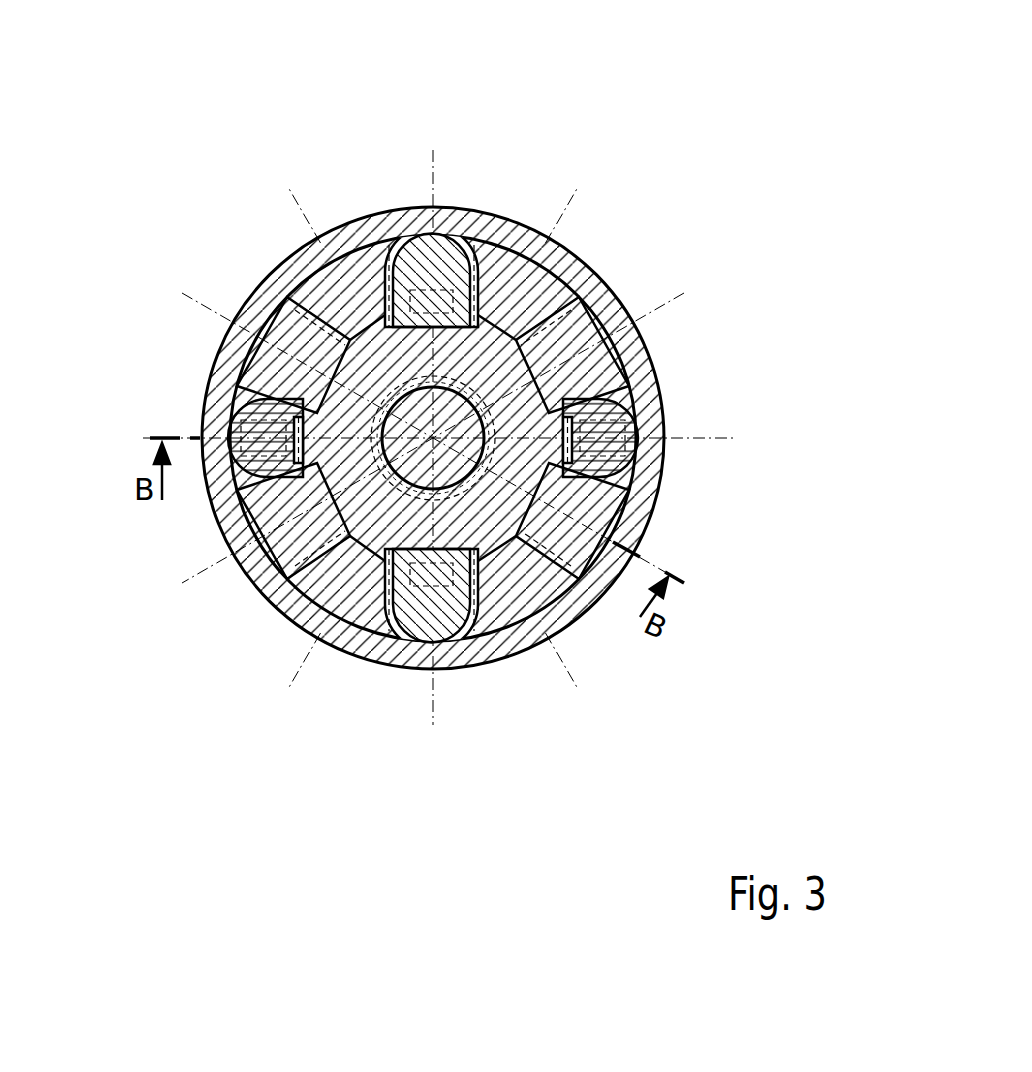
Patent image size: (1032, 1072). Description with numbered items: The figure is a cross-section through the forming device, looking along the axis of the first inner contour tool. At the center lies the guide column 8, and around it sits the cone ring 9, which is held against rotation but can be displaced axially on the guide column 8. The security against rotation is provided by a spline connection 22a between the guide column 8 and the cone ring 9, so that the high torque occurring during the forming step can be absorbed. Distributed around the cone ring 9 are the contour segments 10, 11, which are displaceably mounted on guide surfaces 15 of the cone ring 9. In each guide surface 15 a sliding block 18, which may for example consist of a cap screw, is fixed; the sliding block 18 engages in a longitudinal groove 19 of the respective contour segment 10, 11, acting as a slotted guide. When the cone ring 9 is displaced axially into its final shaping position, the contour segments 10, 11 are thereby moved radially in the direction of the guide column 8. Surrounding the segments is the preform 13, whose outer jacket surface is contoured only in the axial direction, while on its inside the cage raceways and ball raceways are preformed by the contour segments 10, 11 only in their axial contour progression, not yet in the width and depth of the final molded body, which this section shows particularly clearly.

The guide column 8 is at (398, 473).
The cone ring 9 is at (355, 370).
The contour segment 10 is at (607, 512).
The contour segment 11 is at (493, 270).
The preform 13 is at (583, 282).
The guide surface 15 is at (323, 402).
The sliding block 18 is at (343, 303).
The longitudinal groove 19 is at (595, 432).
The spline connection 22a is at (493, 418).